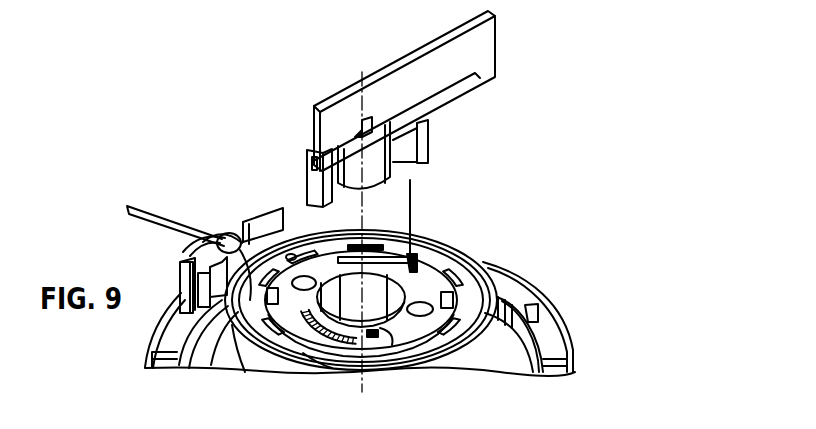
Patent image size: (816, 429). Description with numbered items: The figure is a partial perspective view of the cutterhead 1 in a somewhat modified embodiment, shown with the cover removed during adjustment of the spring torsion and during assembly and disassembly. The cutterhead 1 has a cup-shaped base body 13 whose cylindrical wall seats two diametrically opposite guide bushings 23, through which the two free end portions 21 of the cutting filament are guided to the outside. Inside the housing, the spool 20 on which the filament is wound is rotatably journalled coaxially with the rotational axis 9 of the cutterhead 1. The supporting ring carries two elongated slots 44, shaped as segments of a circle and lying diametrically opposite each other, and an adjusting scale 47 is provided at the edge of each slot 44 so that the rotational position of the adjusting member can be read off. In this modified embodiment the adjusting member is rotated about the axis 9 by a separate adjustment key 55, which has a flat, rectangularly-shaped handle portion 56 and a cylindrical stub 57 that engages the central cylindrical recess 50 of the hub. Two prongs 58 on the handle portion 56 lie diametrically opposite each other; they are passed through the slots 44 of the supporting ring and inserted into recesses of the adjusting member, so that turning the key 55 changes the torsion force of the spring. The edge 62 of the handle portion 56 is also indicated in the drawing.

The cutterhead 1 is at (154, 115).
The rotational axis 9 is at (360, 74).
The base body 13 is at (570, 330).
The spool 20 is at (268, 360).
The free end portions 21 is at (145, 217).
The guide bushings 23 is at (220, 235).
The elongated slots 44 is at (422, 270).
The adjusting scale 47 is at (336, 343).
The central cylindrical recess 50 is at (400, 305).
The adjustment key 55 is at (449, 91).
The handle portion 56 is at (427, 52).
The cylindrical stub 57 is at (372, 180).
The prongs 58 is at (304, 185).
The plate edge 62 is at (430, 91).